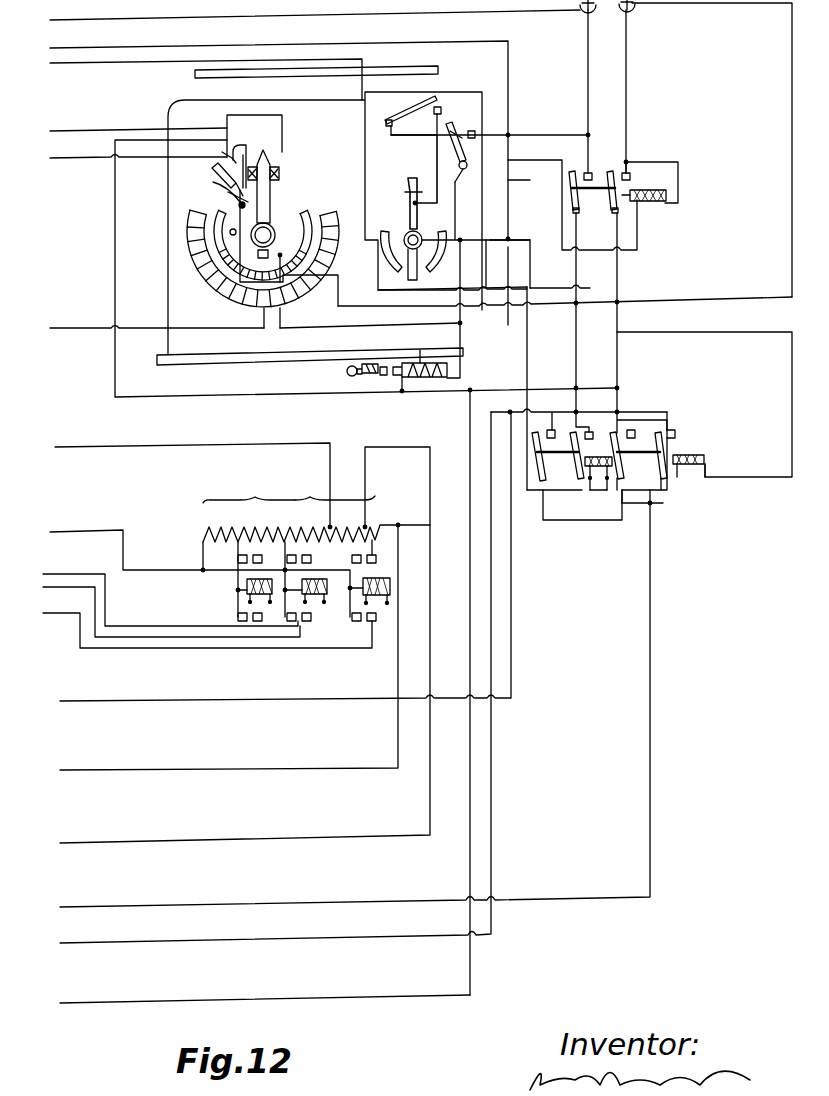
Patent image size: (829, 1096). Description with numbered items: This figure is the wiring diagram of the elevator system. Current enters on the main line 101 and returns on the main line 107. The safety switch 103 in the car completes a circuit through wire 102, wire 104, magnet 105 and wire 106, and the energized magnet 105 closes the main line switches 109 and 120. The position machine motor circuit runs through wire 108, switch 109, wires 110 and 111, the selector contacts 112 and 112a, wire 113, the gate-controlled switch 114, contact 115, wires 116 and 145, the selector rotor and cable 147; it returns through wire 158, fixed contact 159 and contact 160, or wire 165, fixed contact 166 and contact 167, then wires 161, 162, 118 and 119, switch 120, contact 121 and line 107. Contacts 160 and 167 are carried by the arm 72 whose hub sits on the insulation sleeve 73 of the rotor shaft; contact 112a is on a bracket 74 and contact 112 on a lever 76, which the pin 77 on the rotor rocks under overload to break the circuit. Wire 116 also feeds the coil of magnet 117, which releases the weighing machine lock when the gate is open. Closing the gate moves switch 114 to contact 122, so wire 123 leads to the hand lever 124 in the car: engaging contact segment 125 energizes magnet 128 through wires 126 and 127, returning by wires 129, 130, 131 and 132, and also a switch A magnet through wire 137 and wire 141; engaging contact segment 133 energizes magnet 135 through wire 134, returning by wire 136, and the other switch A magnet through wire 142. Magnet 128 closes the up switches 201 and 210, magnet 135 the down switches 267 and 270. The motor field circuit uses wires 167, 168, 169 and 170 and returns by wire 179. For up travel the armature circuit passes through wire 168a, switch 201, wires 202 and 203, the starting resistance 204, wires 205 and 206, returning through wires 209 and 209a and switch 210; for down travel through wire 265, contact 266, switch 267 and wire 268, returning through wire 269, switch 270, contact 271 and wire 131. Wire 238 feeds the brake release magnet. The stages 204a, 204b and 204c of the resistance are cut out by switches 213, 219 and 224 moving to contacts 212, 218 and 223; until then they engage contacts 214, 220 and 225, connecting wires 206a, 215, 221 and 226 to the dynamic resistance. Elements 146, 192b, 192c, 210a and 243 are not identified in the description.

The arm 72 is at (300, 185).
The insulation sleeve 73 is at (280, 234).
The bracket 74 is at (242, 163).
The lever 76 is at (198, 216).
The pin 77 is at (240, 238).
The main line 101 is at (587, 52).
The wire 102 is at (522, 130).
The emergency or safety switch 103 is at (465, 160).
The wire 104 is at (528, 160).
The magnet 105 is at (652, 188).
The wire 106 is at (679, 181).
The main line 107 is at (627, 44).
The wire 108 is at (591, 142).
The switch 109 is at (570, 203).
The wire 110 is at (578, 270).
The wire 111 is at (482, 308).
The contact 112 is at (216, 163).
The contact 112a is at (228, 150).
The wire 113 is at (227, 115).
The switch 114 is at (415, 96).
The contact 115 is at (390, 124).
The wire 116 is at (414, 139).
The magnet 117 is at (425, 350).
The wire 118 is at (440, 396).
The wire 119 is at (617, 355).
The switch 120 is at (610, 208).
The contact 121 is at (625, 162).
The contact 122 is at (453, 114).
The wire 123 is at (436, 162).
The hand lever 124 is at (415, 205).
The contact segment 125 is at (428, 238).
The wire 126 is at (508, 264).
The wire 127 is at (530, 270).
The magnet 128 is at (597, 459).
The wire 129 is at (637, 492).
The wire 130 is at (645, 478).
The wire 131 is at (618, 419).
The wire 132 is at (617, 389).
The contact segment 133 is at (383, 265).
The wire 134 is at (792, 380).
The magnet 135 is at (690, 455).
The wire 136 is at (670, 482).
The wire 137 is at (521, 181).
The wire 141 is at (790, 44).
The wire 142 is at (365, 160).
The wire 145 is at (322, 328).
The stem 146 is at (215, 290).
The cable 147 is at (235, 306).
The wire 158 is at (121, 130).
The fixed contact 159 is at (281, 170).
The contact 160 is at (282, 176).
The wire 161 is at (267, 140).
The wire 162 is at (222, 396).
The wire 165 is at (121, 156).
The fixed contact 166 is at (222, 182).
The contact 167 is at (576, 355).
The wire 168 is at (575, 410).
The wire 168a is at (572, 388).
The wire 169 is at (523, 408).
The wire 170 is at (493, 834).
The wire 179 is at (245, 1002).
The line 192b is at (173, 484).
The line 192c is at (380, 483).
The switch 201 is at (562, 456).
The wire 202 is at (541, 500).
The wire 203 is at (450, 515).
The starting resistance 204 is at (296, 525).
The first stage of line resistance 204a is at (249, 493).
The second stage of line resistance 204b is at (291, 492).
The last stage of line resistance 204c is at (342, 489).
The wire 205 is at (200, 557).
The wire 206 is at (182, 571).
The wire 206a is at (212, 570).
The wire 209 is at (658, 650).
The wire 209a is at (591, 507).
The switch 210 is at (574, 476).
The contact 210a is at (626, 430).
The contact 212 is at (226, 556).
The switch 213 is at (235, 601).
The contact 214 is at (256, 622).
The wire 215 is at (150, 626).
The contact 218 is at (297, 560).
The switch 219 is at (288, 593).
The contact 220 is at (298, 622).
The wire 221 is at (212, 658).
The contact 223 is at (339, 551).
The switch 224 is at (350, 597).
The contact 225 is at (372, 623).
The wire 226 is at (290, 660).
The wire 238 is at (396, 666).
The line 243 is at (523, 600).
The wire 265 is at (660, 411).
The contact 266 is at (638, 446).
The switch 267 is at (668, 446).
The wire 268 is at (660, 503).
The wire 269 is at (575, 520).
The switch 270 is at (629, 461).
The contact 271 is at (660, 430).